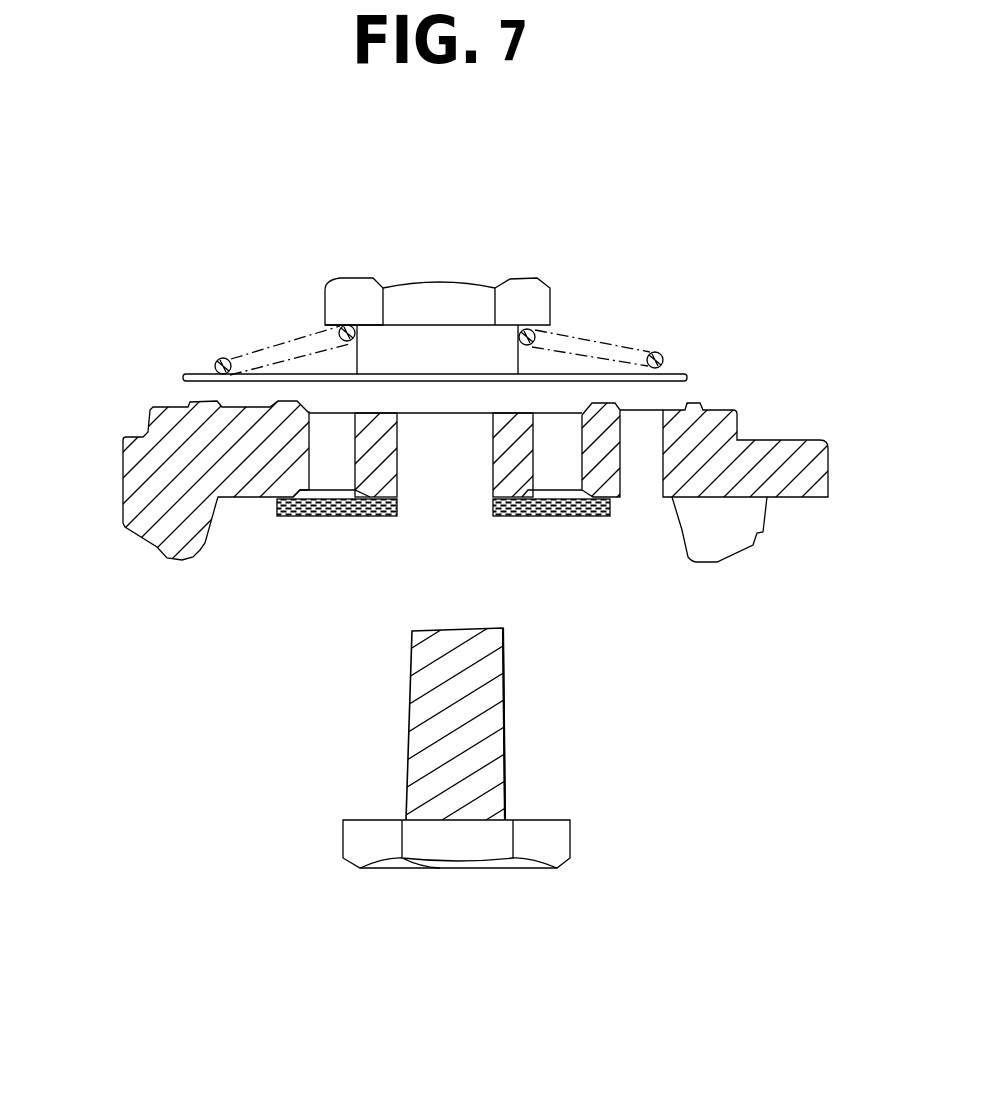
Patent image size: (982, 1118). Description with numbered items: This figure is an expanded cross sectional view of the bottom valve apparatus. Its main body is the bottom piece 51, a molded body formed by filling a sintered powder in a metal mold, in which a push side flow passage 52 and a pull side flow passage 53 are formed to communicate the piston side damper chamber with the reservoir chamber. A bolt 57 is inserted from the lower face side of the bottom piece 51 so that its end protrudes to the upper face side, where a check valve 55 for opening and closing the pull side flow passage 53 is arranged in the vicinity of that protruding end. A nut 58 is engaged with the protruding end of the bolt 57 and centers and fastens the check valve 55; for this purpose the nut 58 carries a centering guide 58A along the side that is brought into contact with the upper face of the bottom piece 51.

The bottom piece 51 is at (807, 468).
The push side flow passage 52 is at (328, 455).
The pull side flow passage 53 is at (645, 452).
The check valve 55 is at (627, 363).
The bolt 57 is at (542, 850).
The nut 58 is at (357, 300).
The centering guide 58A is at (377, 360).